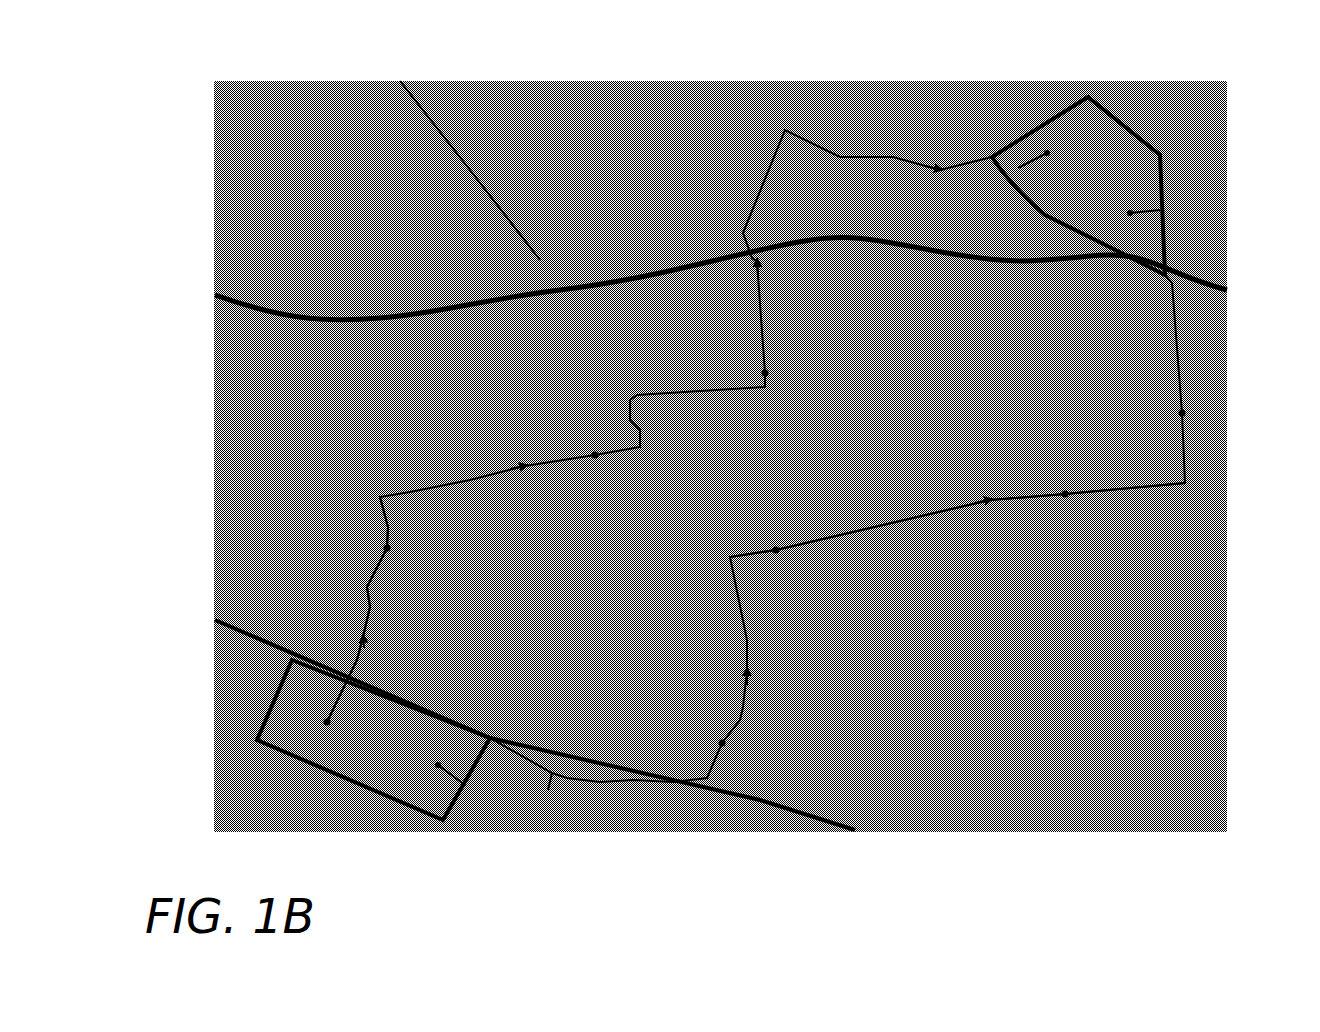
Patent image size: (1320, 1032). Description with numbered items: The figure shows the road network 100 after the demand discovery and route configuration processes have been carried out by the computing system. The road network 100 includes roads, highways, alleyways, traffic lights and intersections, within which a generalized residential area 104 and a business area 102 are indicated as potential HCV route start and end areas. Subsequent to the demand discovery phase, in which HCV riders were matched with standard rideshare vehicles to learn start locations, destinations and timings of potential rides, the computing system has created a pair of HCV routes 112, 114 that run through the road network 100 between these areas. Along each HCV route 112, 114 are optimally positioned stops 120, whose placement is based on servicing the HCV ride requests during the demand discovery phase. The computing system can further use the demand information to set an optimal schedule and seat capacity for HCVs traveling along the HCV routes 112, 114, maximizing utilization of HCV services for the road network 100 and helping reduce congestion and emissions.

The road network 100 is at (324, 46).
The business area 102 is at (1105, 175).
The residential area 104 is at (287, 732).
The HCV route 112 is at (1108, 506).
The HCV route 114 is at (372, 538).
The stops 120 is at (595, 453).